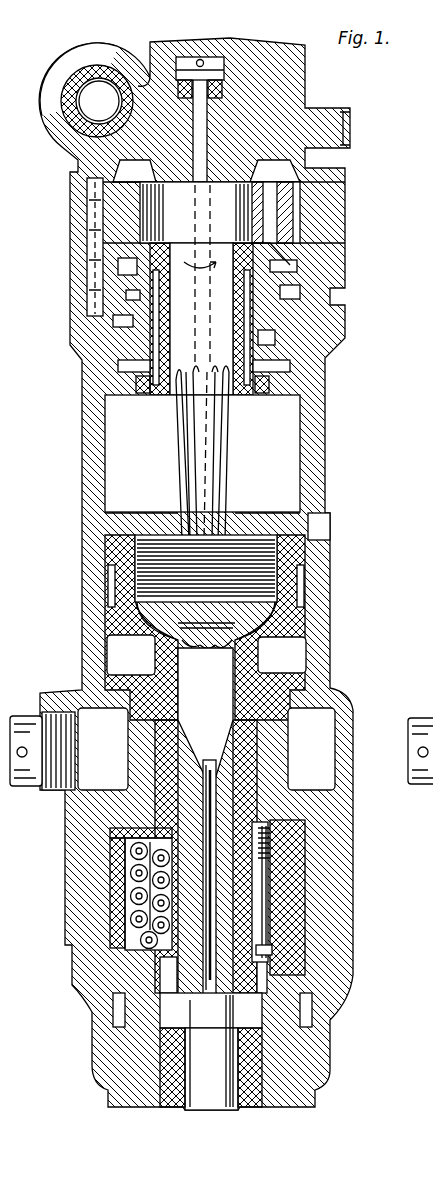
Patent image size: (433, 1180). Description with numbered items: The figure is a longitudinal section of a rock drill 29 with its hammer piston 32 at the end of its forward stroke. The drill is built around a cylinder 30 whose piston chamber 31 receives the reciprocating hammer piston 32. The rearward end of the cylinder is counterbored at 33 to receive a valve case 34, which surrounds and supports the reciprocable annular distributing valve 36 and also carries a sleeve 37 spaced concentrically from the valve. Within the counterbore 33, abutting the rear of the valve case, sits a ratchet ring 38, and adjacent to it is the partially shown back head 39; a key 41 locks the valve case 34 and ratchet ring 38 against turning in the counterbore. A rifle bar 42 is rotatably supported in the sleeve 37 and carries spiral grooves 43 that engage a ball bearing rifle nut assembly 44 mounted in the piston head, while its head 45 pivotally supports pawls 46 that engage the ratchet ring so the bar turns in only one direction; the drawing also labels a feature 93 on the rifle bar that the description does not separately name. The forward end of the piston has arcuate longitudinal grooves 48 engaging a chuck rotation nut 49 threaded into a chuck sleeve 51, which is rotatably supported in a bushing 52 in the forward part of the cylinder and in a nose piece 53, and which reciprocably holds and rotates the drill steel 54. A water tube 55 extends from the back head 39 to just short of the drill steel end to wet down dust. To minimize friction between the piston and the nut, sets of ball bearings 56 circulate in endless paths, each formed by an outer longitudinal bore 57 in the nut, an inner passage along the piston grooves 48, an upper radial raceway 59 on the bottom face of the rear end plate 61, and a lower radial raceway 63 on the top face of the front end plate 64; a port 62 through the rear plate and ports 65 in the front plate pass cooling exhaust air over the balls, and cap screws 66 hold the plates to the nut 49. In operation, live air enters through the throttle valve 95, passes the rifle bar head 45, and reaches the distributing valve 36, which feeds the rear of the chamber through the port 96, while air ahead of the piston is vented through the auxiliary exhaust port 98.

The rock drill 29 is at (369, 150).
The cylinder 30 is at (318, 472).
The piston chamber 31 is at (296, 445).
The hammer piston 32 is at (300, 556).
The counterbore 33 is at (100, 356).
The valve case 34 is at (308, 274).
The distributing valve 36 is at (278, 370).
The sleeve 37 is at (238, 396).
The ratchet ring 38 is at (303, 215).
The back head 39 is at (160, 46).
The key 41 is at (90, 220).
The rifle bar 42 is at (172, 412).
The spiral grooves 43 is at (188, 448).
The ball bearing rifle nut assembly 44 is at (276, 592).
The rifle bar head 45 is at (170, 178).
The pawls 46 is at (150, 222).
The arcuate longitudinal grooves 48 is at (262, 782).
The chuck rotation nut 49 is at (300, 876).
The chuck sleeve 51 is at (310, 990).
The bushing 52 is at (300, 848).
The nose piece 53 is at (325, 1052).
The drill steel 54 is at (212, 1045).
The water tube 55 is at (213, 668).
The ball bearings 56 is at (145, 876).
The outer longitudinal bore 57 is at (140, 902).
The upper radial raceway 59 is at (99, 894).
The rear end plate 61 is at (125, 830).
The port 62 is at (160, 836).
The lower radial raceway 63 is at (130, 936).
The front end plate 64 is at (100, 966).
The ports 65 is at (170, 946).
The cap screws 66 is at (305, 896).
The spline groove 93 is at (205, 435).
The throttle valve 95 is at (100, 62).
The port 96 is at (125, 392).
The auxiliary exhaust port 98 is at (322, 358).